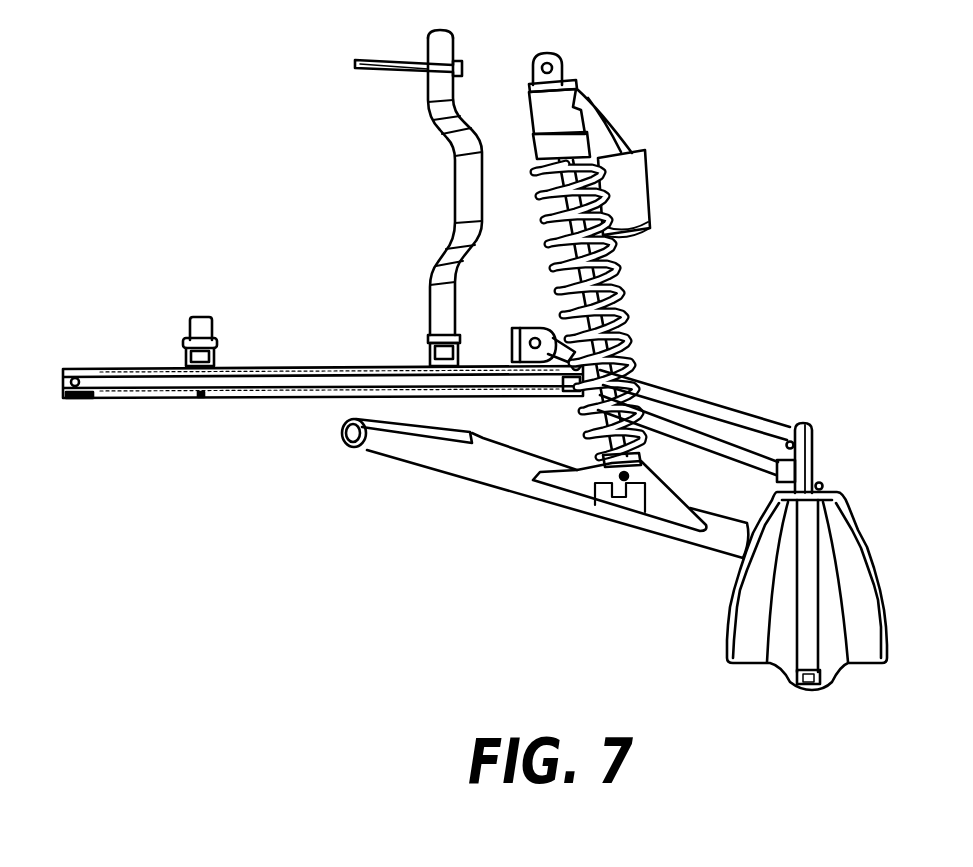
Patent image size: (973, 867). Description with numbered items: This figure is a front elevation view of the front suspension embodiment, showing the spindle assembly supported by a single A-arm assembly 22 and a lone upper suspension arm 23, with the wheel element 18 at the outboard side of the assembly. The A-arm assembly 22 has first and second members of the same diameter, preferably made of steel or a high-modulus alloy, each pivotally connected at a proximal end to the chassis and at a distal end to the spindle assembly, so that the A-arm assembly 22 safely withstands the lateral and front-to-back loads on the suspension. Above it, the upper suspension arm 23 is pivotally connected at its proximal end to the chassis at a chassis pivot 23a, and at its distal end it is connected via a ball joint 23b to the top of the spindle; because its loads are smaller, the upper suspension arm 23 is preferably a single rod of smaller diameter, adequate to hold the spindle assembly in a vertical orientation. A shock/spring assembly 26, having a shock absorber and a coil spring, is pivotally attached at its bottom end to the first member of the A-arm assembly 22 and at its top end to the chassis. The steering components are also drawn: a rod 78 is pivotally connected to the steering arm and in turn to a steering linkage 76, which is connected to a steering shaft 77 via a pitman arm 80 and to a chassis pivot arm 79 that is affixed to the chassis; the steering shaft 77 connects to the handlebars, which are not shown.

The wheel 18 is at (887, 607).
The A-arm assembly 22 is at (484, 497).
The upper suspension arm 23 is at (714, 403).
The chassis pivot 23a is at (533, 327).
The ball joint 23b is at (792, 434).
The shock/spring assembly 26 is at (612, 262).
The steering linkage 76 is at (228, 399).
The steering shaft 77 is at (455, 193).
The rod 78 is at (705, 446).
The chassis pivot arm 79 is at (186, 330).
The pitman arm 80 is at (428, 360).